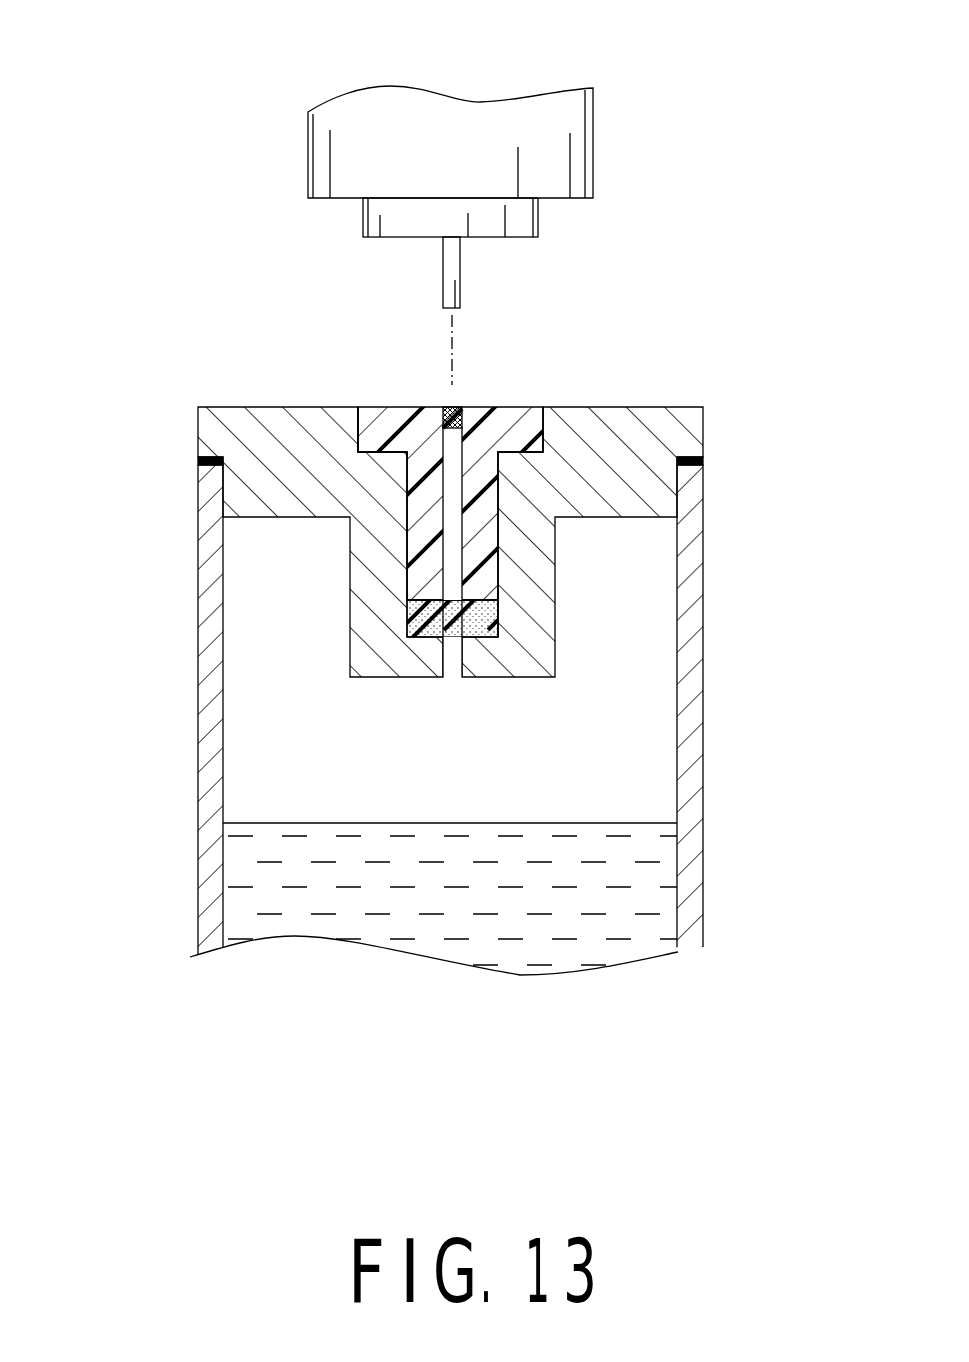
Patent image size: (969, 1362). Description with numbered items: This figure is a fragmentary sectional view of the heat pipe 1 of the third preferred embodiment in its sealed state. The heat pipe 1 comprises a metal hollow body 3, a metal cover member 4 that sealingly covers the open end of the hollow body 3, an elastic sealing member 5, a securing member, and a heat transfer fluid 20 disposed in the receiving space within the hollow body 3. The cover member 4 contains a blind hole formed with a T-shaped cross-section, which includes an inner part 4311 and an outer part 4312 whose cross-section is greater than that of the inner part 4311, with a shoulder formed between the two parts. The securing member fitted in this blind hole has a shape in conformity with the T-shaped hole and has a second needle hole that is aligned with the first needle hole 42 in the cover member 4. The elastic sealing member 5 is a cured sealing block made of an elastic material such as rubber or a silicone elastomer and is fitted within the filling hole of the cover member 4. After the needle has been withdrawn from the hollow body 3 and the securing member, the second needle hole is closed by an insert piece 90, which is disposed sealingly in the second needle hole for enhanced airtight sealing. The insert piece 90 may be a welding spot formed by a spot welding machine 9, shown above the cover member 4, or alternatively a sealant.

The spot welding machine 9 is at (592, 157).
The insert piece 90 is at (463, 410).
The heat pipe 1 is at (718, 420).
The metal hollow body 3 is at (700, 515).
The metal cover member 4 is at (650, 415).
The outer part 4312 is at (356, 412).
The inner part 4311 is at (408, 588).
The elastic sealing member 5 is at (512, 623).
The first needle hole 42 is at (470, 677).
The heat transfer fluid 20 is at (604, 822).